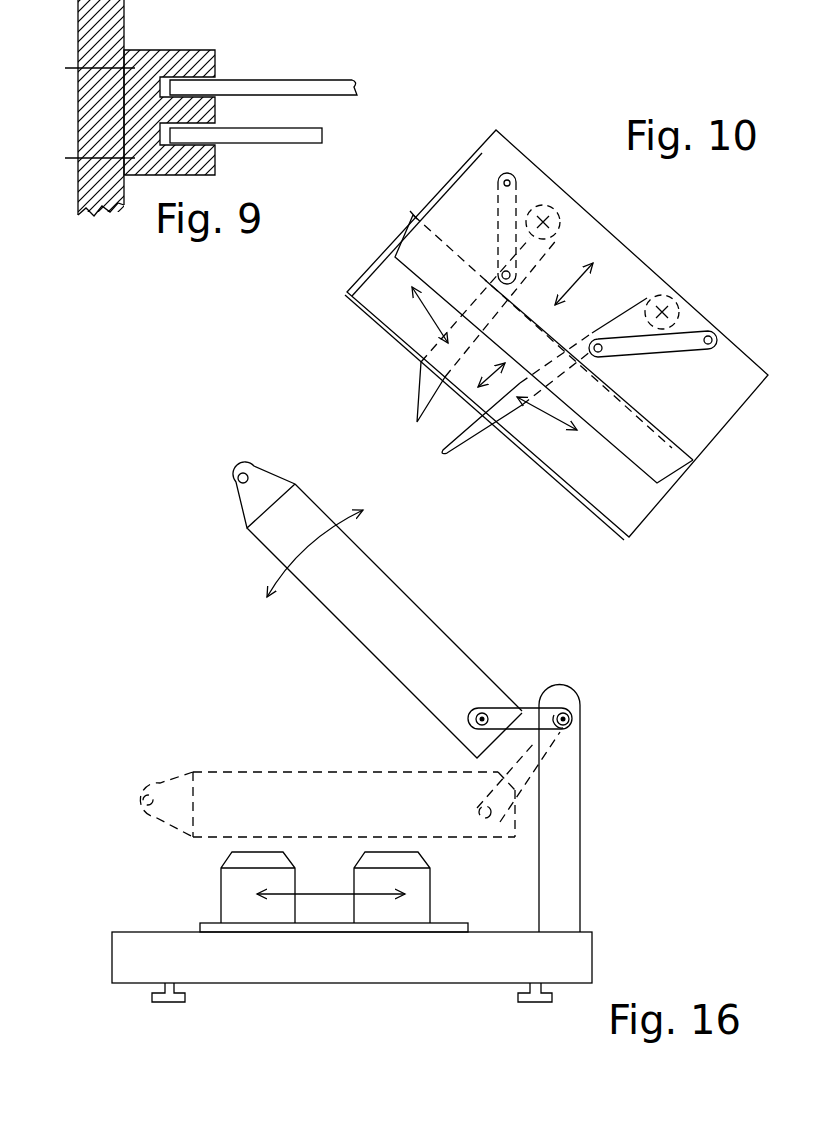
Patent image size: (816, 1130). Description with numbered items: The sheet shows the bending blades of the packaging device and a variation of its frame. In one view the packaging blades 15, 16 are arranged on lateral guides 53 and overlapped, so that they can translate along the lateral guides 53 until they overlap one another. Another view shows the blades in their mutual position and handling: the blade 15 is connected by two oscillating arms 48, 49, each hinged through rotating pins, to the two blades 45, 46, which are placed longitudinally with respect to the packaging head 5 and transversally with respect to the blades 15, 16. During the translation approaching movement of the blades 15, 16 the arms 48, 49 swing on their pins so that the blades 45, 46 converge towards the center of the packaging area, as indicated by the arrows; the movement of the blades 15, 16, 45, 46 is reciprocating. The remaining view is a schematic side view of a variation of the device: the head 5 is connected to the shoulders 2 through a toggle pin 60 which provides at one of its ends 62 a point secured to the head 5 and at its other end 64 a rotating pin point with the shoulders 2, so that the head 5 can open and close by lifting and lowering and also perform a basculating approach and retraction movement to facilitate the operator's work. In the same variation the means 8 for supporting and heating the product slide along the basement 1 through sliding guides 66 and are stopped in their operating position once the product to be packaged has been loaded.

In FIG. 16, the basement 1 is at (440, 950).
In FIG. 16, the shoulders 2 is at (560, 848).
In FIG. 16, the packaging head 5 is at (387, 648).
In FIG. 16, the means for supporting and heating the product 8 is at (238, 902).
In FIG. 9, the packaging blade 15 is at (320, 135).
In FIG. 10, the packaging blade 15 is at (712, 383).
In FIG. 9, the packaging blade 16 is at (267, 87).
In FIG. 10, the packaging blade 16 is at (603, 478).
In FIG. 10, the blade 45 is at (427, 388).
In FIG. 10, the blade 46 is at (480, 427).
In FIG. 10, the oscillating arm 48 is at (677, 343).
In FIG. 10, the oscillating arm 49 is at (507, 210).
In FIG. 9, the lateral guides 53 is at (82, 113).
In FIG. 16, the toggle pin 60 is at (517, 720).
In FIG. 16, the end of toggle pin 62 is at (470, 722).
In FIG. 16, the end of toggle pin 64 is at (568, 714).
In FIG. 16, the sliding guides 66 is at (318, 926).